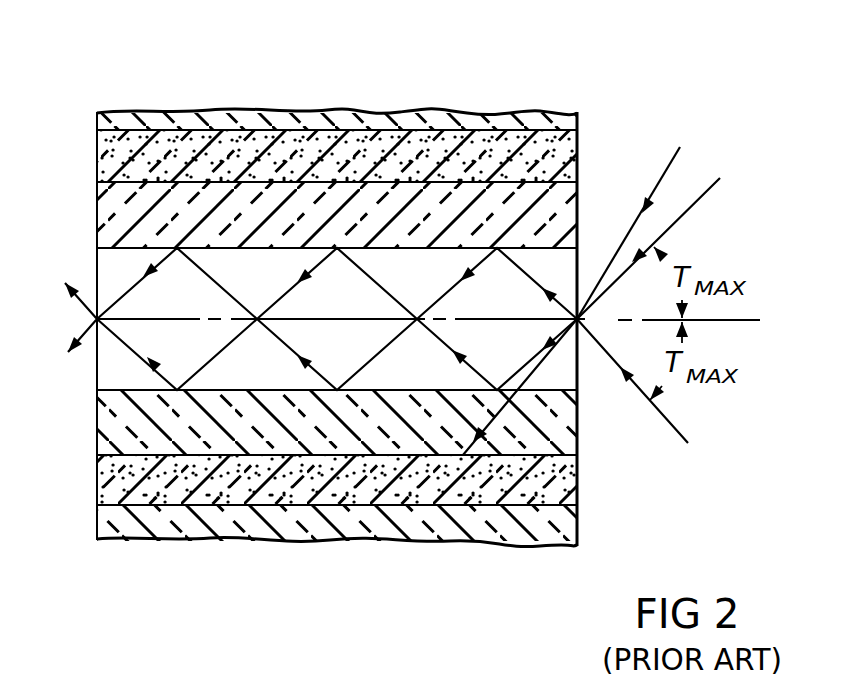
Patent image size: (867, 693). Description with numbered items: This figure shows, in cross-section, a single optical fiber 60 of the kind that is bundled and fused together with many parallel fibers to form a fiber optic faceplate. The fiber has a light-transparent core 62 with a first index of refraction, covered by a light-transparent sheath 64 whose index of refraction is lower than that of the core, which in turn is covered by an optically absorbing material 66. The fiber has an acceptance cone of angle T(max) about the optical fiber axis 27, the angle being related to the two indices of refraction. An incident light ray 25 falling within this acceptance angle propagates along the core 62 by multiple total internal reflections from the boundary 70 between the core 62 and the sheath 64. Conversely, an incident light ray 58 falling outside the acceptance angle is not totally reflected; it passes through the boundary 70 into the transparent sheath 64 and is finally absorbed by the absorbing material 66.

The optical fiber 60 is at (302, 289).
The optically absorbing material 66 is at (103, 147).
The light-transparent sheath 64 is at (100, 196).
The light-transparent core 62 is at (105, 266).
The boundary 70 is at (109, 389).
The incident light ray 58 is at (682, 148).
The incident light ray 25 is at (713, 183).
The optical fiber axis 27 is at (742, 322).